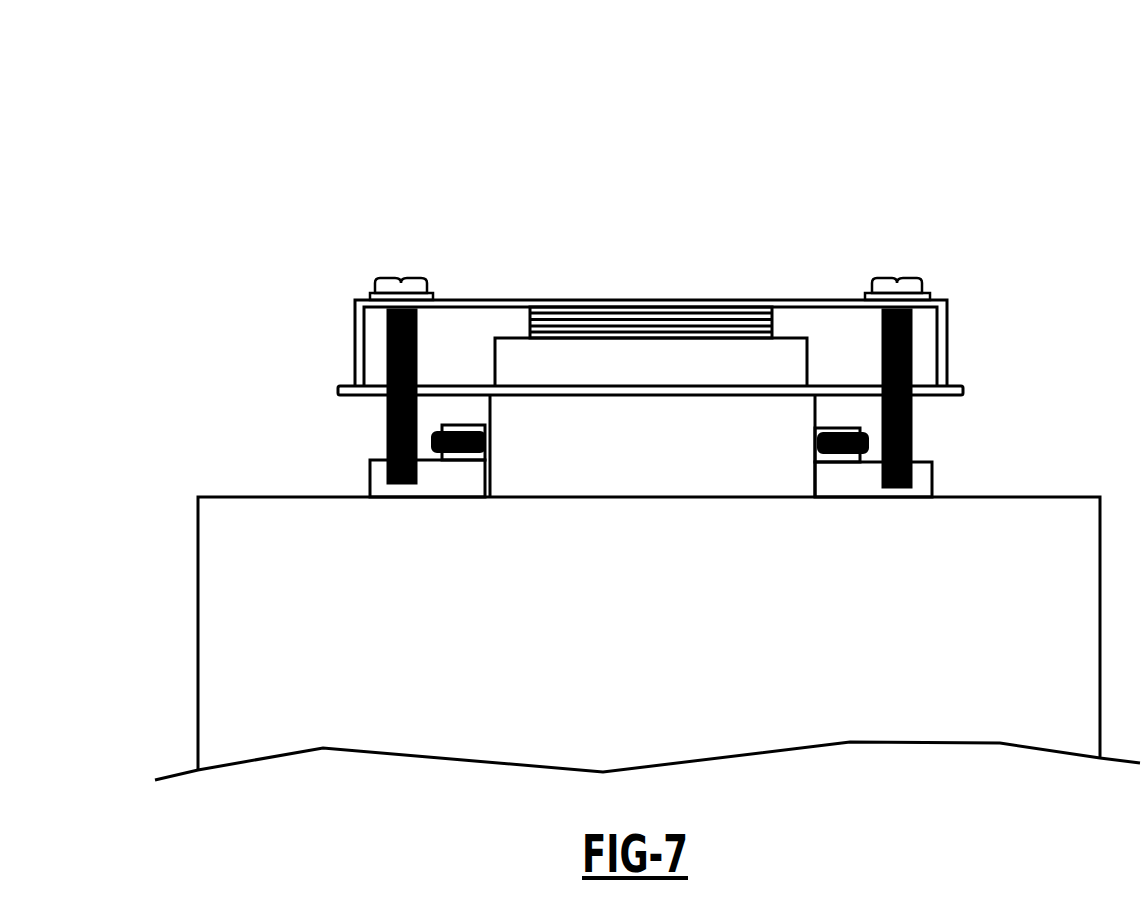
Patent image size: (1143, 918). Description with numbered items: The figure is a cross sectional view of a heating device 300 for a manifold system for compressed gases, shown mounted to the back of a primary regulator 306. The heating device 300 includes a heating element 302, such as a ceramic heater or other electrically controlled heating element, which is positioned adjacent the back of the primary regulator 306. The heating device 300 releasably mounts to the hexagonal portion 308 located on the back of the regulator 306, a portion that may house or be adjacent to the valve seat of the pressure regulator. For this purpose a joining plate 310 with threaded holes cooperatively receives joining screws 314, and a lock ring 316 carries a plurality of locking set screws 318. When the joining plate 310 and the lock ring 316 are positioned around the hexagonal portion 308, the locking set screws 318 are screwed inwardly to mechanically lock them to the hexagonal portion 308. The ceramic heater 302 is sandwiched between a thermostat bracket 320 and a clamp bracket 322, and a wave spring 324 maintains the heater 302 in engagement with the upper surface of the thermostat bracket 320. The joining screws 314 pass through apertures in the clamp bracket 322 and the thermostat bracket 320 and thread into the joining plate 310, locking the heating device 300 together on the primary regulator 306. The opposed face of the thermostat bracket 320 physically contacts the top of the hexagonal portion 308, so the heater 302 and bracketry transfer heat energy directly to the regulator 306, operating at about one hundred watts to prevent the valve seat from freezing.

The heating device 300 is at (1006, 146).
The heating element 302 is at (773, 362).
The primary regulator 306 is at (1028, 507).
The hexagonal portion 308 is at (375, 708).
The joining plate 310 is at (923, 475).
The joining screws 314 is at (389, 283).
The lock ring 316 is at (840, 427).
The locking set screws 318 is at (430, 442).
The thermostat bracket 320 is at (950, 386).
The clamp bracket 322 is at (355, 335).
The wave spring 324 is at (573, 315).